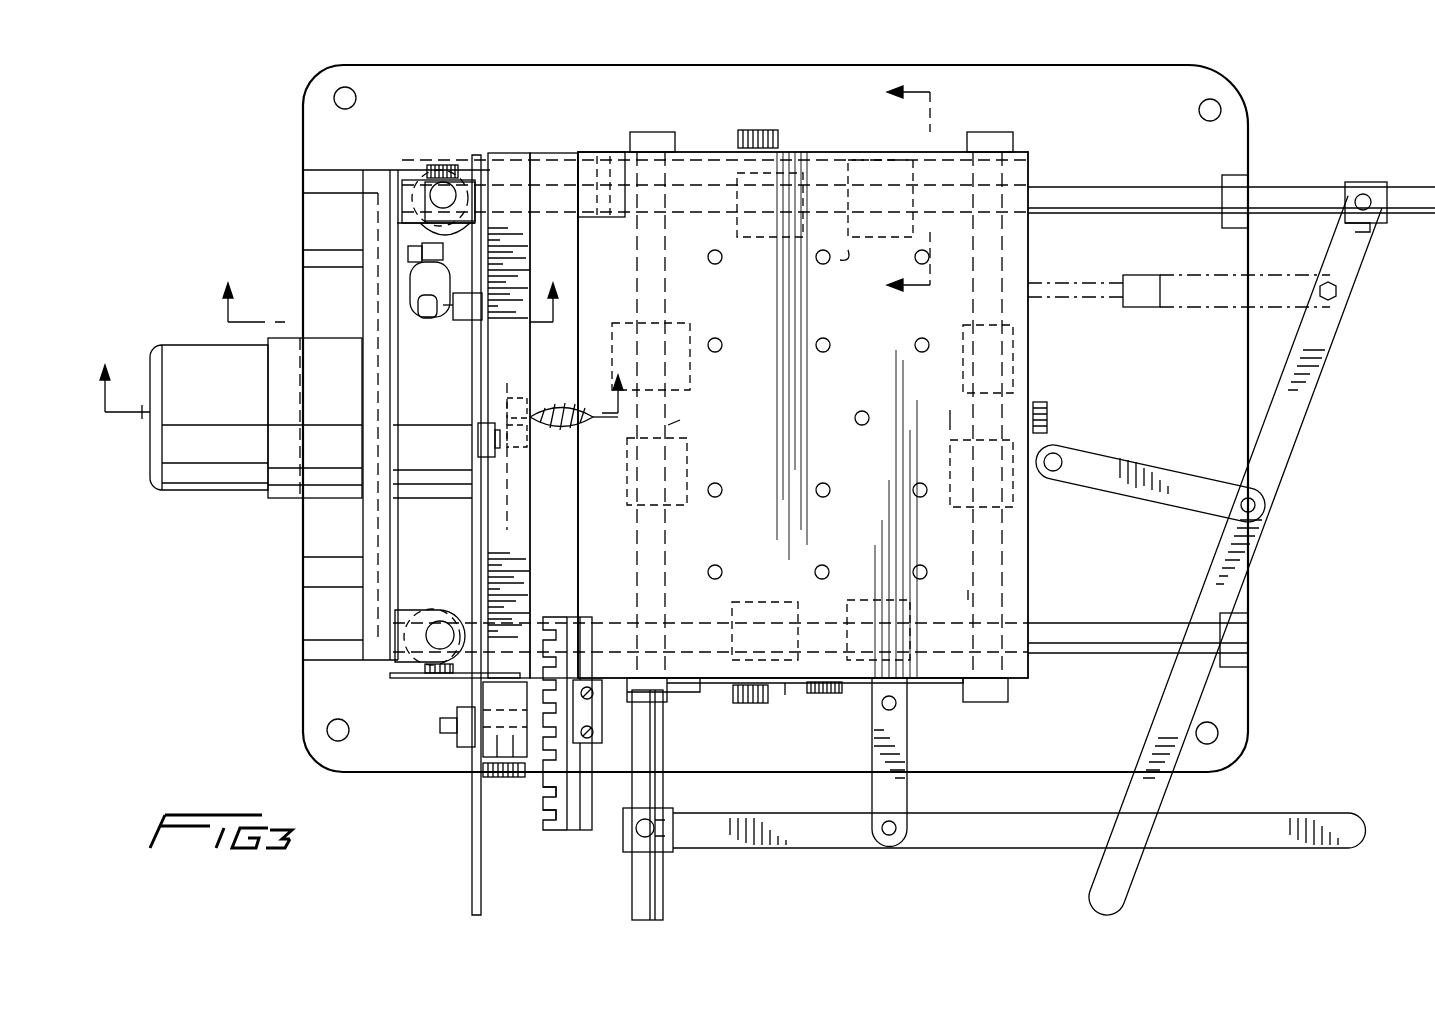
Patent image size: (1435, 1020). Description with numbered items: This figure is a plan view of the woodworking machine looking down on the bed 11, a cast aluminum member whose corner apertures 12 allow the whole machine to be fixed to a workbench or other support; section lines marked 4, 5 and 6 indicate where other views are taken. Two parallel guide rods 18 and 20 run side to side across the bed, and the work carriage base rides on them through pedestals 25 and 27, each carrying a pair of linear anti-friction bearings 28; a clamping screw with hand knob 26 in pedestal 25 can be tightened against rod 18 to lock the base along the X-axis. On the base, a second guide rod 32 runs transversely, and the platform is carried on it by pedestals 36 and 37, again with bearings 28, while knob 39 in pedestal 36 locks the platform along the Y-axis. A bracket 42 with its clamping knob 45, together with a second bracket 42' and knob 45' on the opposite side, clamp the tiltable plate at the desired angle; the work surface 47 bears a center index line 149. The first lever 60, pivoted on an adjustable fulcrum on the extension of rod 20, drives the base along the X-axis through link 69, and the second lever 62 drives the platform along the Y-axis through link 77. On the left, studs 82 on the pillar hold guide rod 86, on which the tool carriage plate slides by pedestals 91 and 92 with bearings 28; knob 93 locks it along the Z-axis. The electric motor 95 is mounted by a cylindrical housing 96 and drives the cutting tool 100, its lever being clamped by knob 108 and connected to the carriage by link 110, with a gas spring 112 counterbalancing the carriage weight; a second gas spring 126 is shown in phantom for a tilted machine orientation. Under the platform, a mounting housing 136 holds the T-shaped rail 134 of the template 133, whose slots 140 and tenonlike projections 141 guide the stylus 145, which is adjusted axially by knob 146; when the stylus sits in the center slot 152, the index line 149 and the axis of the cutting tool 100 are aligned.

The section line 4- 4 is at (359, 382).
The section line 5- 5 is at (388, 294).
The section line 6- 6 is at (901, 190).
The bed 11 is at (513, 74).
The apertures 12 is at (333, 98).
The guide rod 18 is at (1108, 656).
The guide rod 20 is at (1138, 190).
The pedestal 25 is at (785, 696).
The hand knob 26 is at (825, 695).
The pedestal 27 is at (836, 267).
The linear anti-friction bearings 28 is at (750, 226).
The guide rod 32 is at (968, 598).
The pedestal 36 is at (950, 412).
The pedestal 37 is at (680, 420).
The knob 39 is at (1048, 410).
The triangular bracket 42 is at (666, 701).
The second clamping bracket 42' is at (803, 382).
The clamping knob 45 is at (747, 713).
The second clamping knob 45' is at (770, 117).
The work surface 47 is at (593, 530).
The first lever 60 is at (1090, 876).
The second lever 62 is at (1295, 850).
The link 69 is at (1120, 486).
The link 77 is at (908, 716).
The studs 82 is at (403, 680).
The guide rod 86 is at (440, 622).
The pedestal 91 is at (420, 608).
The pedestal 92 is at (425, 170).
The knob 93 is at (448, 680).
The electric motor 95 is at (175, 483).
The cylindrical housing 96 is at (278, 500).
The cutting tool 100 is at (555, 426).
The knob 108 is at (457, 166).
The link 110 is at (478, 441).
The gas spring 112 is at (410, 290).
The second gas spring 126 is at (1200, 310).
The template 133 is at (552, 834).
The T-shaped rail 134 is at (578, 834).
The mounting housing 136 is at (605, 745).
The slots 140 is at (543, 795).
The tenonlike projections 141 is at (545, 820).
The stylus 145 is at (446, 738).
The knob 146 is at (505, 778).
The center index line 149 is at (596, 426).
The center slot 152 is at (545, 712).